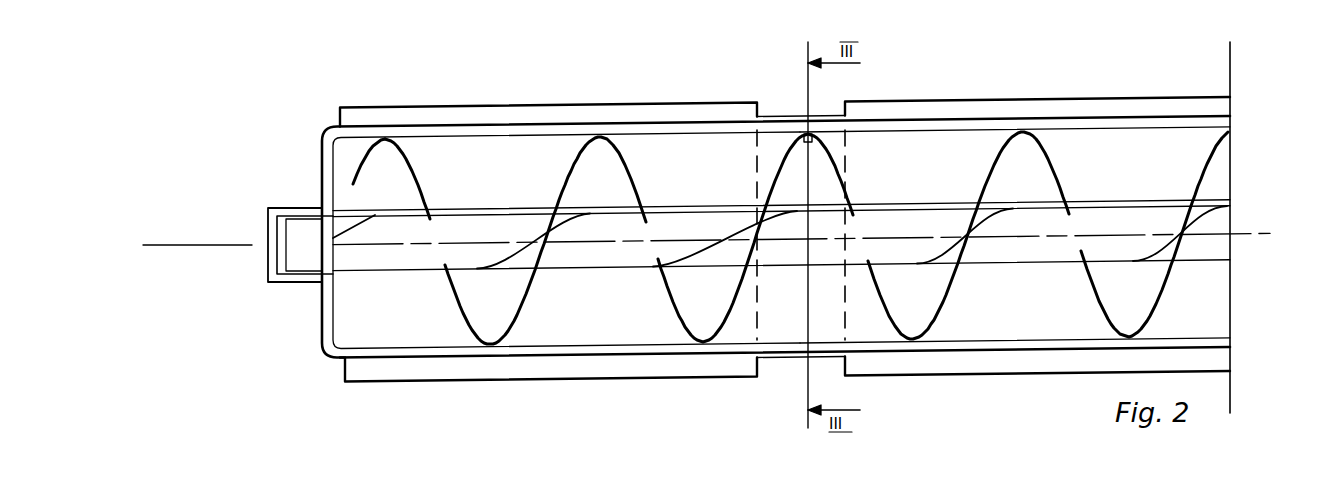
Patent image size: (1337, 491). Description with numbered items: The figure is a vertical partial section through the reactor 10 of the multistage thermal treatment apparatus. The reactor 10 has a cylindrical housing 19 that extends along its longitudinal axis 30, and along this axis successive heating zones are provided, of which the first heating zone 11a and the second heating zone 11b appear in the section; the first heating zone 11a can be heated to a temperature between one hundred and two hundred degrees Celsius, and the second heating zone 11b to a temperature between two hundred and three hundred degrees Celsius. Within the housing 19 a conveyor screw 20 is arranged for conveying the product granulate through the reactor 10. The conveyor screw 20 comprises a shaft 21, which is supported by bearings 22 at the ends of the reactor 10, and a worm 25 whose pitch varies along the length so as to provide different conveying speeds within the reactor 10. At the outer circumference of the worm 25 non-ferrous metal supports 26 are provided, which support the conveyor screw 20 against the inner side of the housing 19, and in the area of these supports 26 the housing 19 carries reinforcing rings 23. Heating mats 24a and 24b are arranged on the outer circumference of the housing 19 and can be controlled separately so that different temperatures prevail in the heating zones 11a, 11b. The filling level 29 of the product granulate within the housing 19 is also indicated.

The reactor 10 is at (612, 403).
The first heating zone 11a is at (590, 333).
The second heating zone 11b is at (977, 330).
The housing 19 is at (325, 362).
The conveyor screw 20 is at (381, 274).
The shaft 21 is at (350, 272).
The bearing 22 is at (293, 207).
The reinforcing ring 23 is at (795, 358).
The heating mat 24a is at (482, 378).
The heating mat 24b is at (1022, 370).
The worm 25 is at (457, 308).
The support 26 is at (812, 136).
The filling level 29 is at (1150, 200).
The longitudinal axis 30 is at (193, 245).